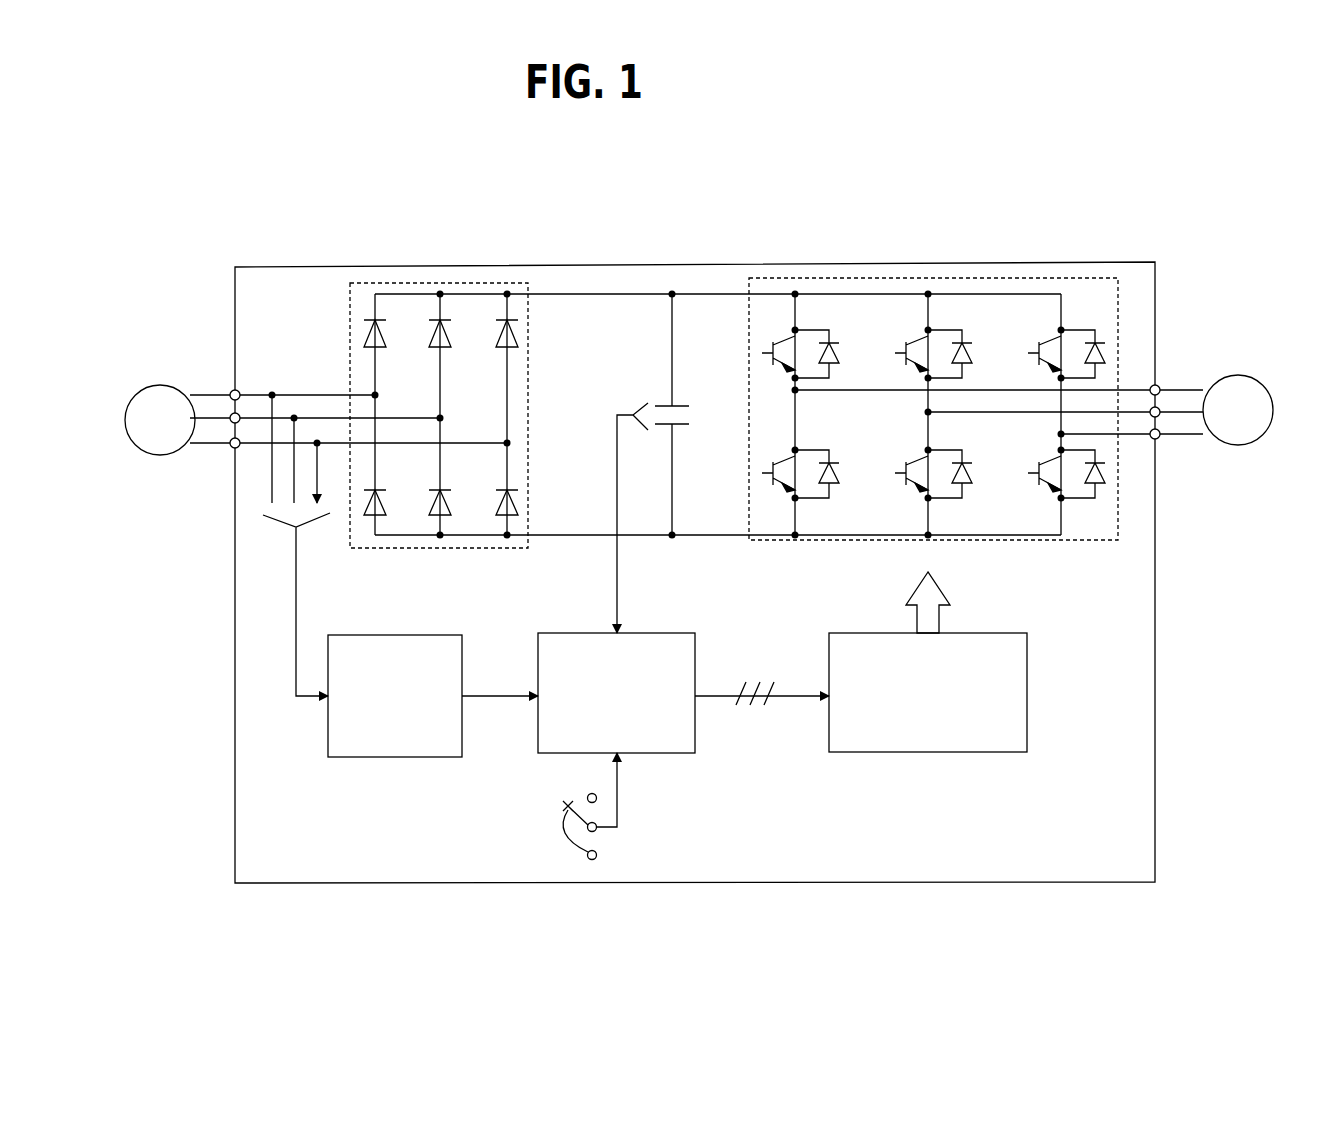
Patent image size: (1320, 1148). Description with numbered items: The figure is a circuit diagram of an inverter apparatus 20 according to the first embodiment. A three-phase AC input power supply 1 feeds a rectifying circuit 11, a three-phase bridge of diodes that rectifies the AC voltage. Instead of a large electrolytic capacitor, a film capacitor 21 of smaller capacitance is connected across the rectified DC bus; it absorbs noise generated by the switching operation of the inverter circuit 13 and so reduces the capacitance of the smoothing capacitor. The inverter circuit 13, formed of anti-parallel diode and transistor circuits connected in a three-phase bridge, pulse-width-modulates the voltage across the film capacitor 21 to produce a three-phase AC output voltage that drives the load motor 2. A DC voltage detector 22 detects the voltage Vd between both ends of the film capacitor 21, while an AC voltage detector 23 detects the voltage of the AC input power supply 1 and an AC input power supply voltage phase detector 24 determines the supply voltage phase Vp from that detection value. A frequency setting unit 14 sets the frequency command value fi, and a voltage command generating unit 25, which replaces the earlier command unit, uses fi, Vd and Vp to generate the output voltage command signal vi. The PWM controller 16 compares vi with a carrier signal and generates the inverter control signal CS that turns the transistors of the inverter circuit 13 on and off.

The AC input power supply 1 is at (162, 372).
The AC motor 2 is at (1228, 358).
The rectifying circuit 11 is at (468, 548).
The inverter circuit 13 is at (1082, 540).
The frequency setting unit 14 is at (617, 850).
The PWM controller 16 is at (930, 755).
The inverter apparatus 20 is at (1155, 728).
The film capacitor 21 is at (683, 387).
The DC voltage detector 22 is at (627, 405).
The AC voltage detector 23 is at (282, 538).
The AC input power supply voltage phase detector 24 is at (375, 760).
The voltage command generating unit 25 is at (660, 633).